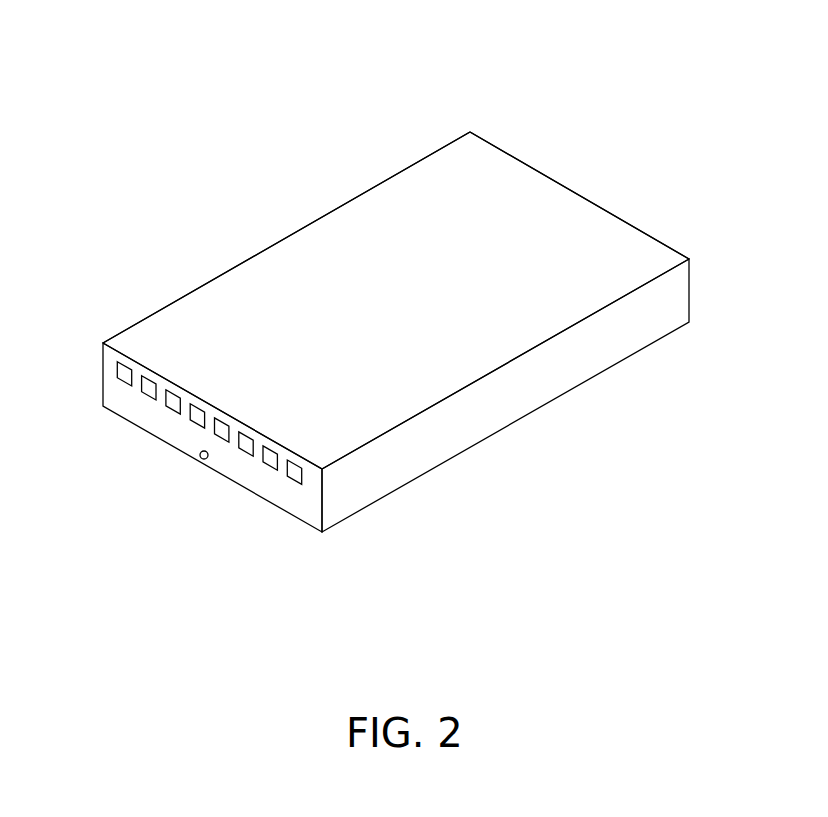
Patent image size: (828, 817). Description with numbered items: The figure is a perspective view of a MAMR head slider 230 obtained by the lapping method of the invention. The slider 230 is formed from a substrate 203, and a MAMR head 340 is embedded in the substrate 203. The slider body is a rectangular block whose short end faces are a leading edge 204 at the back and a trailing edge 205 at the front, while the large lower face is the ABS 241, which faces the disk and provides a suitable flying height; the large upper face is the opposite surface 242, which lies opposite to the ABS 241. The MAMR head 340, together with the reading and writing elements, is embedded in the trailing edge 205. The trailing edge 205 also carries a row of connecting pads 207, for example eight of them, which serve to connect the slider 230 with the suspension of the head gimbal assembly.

The MAMR head slider 230 is at (215, 56).
The substrate 203 is at (396, 210).
The opposite surface 242 is at (312, 263).
The leading edge 204 is at (582, 194).
The trailing edge 205 is at (300, 503).
The ABS 241 is at (577, 388).
The connecting pads 207 is at (153, 395).
The MAMR head 340 is at (202, 459).